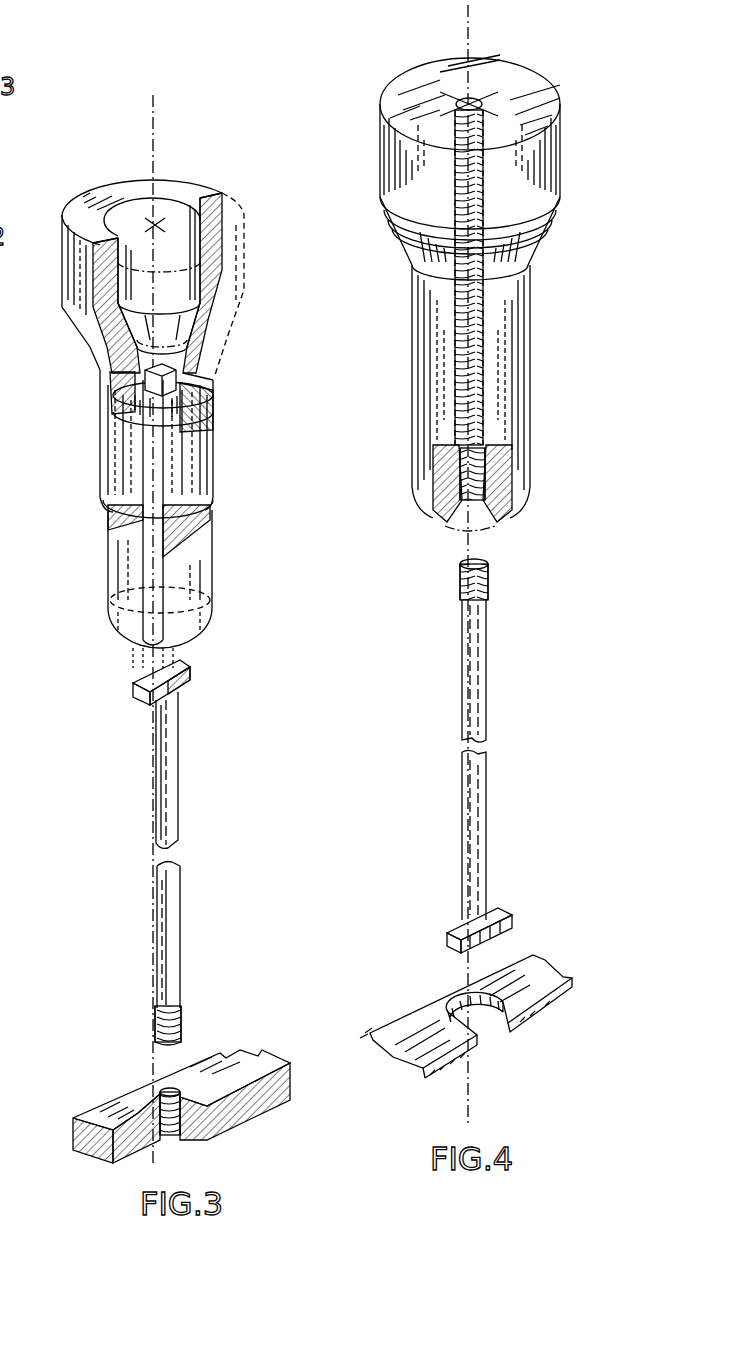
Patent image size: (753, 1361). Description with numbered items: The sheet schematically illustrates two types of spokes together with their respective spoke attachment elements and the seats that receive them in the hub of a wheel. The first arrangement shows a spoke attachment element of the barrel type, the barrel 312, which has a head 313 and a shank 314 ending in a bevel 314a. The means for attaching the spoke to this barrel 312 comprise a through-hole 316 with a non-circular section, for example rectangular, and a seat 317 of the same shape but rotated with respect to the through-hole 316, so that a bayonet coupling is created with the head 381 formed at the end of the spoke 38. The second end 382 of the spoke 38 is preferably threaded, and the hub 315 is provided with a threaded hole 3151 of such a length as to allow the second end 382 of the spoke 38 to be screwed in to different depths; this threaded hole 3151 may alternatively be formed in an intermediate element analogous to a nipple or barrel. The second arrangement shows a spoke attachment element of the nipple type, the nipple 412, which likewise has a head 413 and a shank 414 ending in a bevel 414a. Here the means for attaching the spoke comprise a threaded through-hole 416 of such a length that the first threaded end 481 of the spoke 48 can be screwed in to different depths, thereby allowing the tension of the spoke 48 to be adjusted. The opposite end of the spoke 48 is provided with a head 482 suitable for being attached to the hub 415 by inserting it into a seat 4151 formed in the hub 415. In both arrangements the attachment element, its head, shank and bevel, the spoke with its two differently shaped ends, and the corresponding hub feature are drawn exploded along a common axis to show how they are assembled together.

In FIG. 3, the barrel 312 is at (278, 320).
In FIG. 3, the head 313 is at (182, 178).
In FIG. 3, the shank 314 is at (105, 463).
In FIG. 3, the bevel 314a is at (120, 628).
In FIG. 3, the hub 315 is at (217, 1057).
In FIG. 3, the threaded hole 3151 is at (158, 1110).
In FIG. 3, the through-hole 316 is at (163, 597).
In FIG. 3, the seat 317 is at (213, 399).
In FIG. 3, the spoke 38 is at (165, 893).
In FIG. 3, the head 381 is at (187, 675).
In FIG. 3, the second end 382 is at (158, 1022).
In FIG. 4, the nipple 412 is at (360, 155).
In FIG. 4, the head 413 is at (393, 182).
In FIG. 4, the shank 414 is at (427, 333).
In FIG. 4, the bevel 414a is at (430, 510).
In FIG. 4, the hub 415 is at (517, 970).
In FIG. 4, the seat 4151 is at (433, 997).
In FIG. 4, the threaded through-hole 416 is at (462, 100).
In FIG. 4, the spoke 48 is at (463, 760).
In FIG. 4, the first threaded end 481 is at (460, 587).
In FIG. 4, the head 482 is at (447, 935).